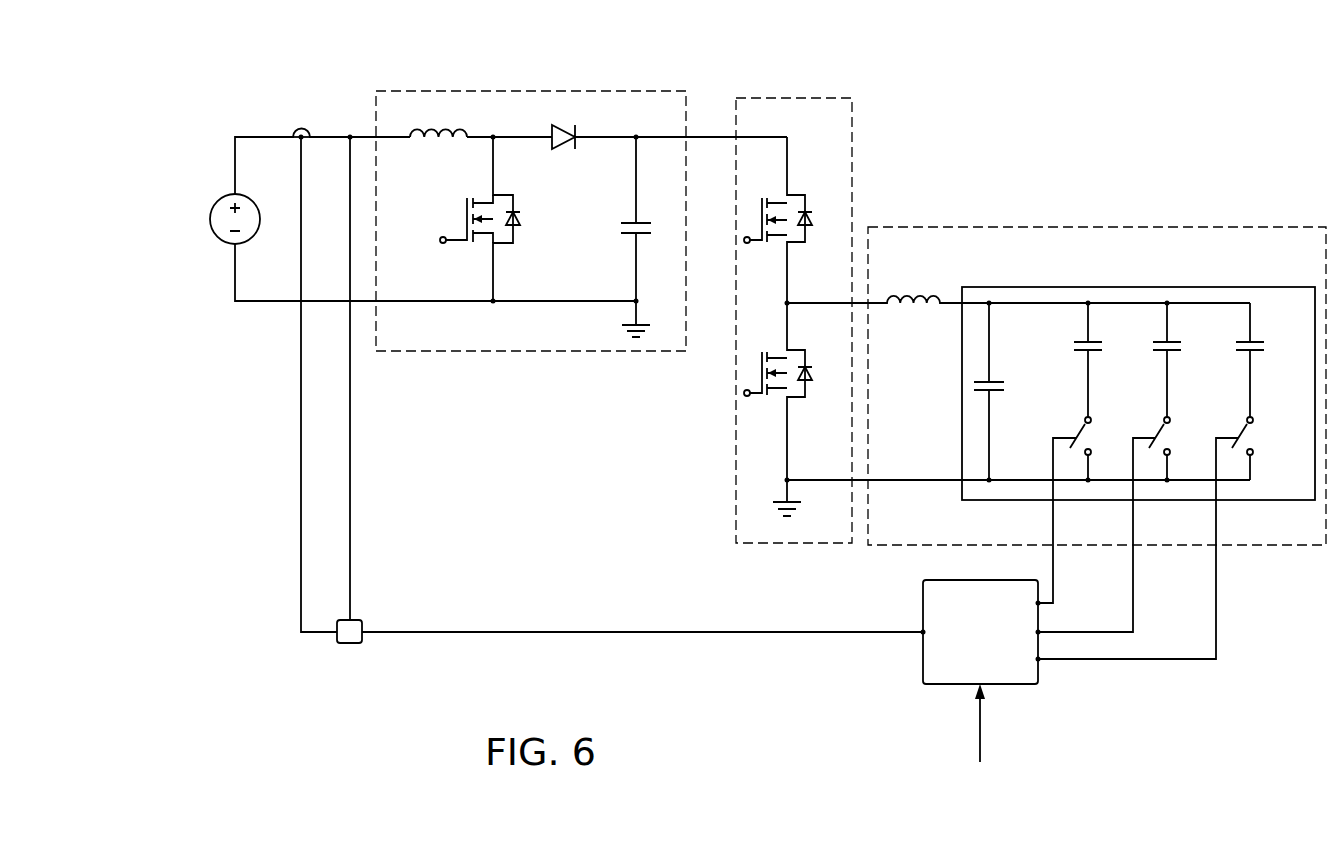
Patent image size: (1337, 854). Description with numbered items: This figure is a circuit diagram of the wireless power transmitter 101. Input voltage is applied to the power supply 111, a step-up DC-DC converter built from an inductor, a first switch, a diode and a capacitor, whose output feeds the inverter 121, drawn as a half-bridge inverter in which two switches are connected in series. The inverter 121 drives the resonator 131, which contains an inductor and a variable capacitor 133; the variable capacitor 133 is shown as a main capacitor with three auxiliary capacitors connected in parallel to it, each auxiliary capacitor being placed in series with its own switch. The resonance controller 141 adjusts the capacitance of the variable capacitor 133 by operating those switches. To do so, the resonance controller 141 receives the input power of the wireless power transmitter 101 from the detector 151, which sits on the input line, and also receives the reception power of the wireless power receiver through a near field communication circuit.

The wireless power transmitter 101 is at (1077, 37).
The power supply 111 is at (654, 91).
The inverter 121 is at (820, 98).
The resonator 131 is at (1292, 227).
The variable capacitor 133 is at (1282, 287).
The resonance controller 141 is at (1002, 645).
The detector 151 is at (362, 620).